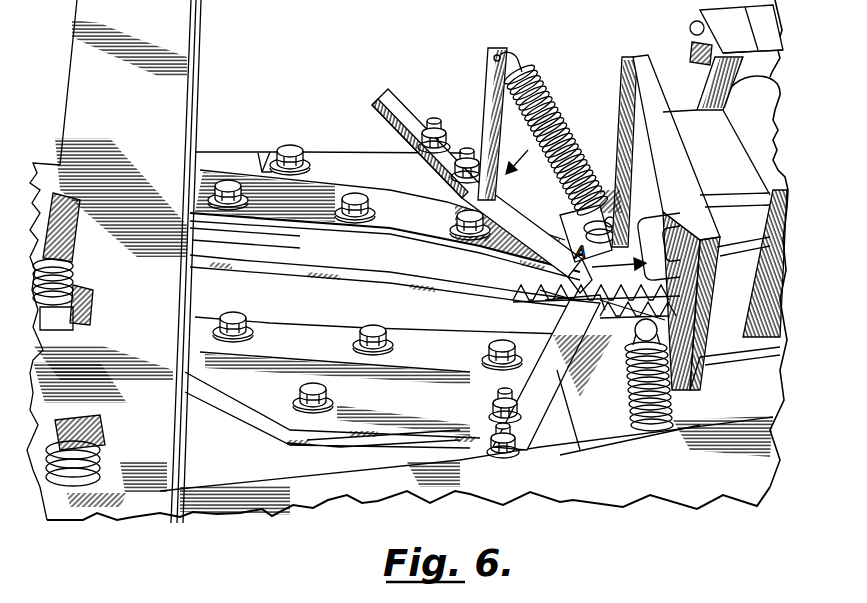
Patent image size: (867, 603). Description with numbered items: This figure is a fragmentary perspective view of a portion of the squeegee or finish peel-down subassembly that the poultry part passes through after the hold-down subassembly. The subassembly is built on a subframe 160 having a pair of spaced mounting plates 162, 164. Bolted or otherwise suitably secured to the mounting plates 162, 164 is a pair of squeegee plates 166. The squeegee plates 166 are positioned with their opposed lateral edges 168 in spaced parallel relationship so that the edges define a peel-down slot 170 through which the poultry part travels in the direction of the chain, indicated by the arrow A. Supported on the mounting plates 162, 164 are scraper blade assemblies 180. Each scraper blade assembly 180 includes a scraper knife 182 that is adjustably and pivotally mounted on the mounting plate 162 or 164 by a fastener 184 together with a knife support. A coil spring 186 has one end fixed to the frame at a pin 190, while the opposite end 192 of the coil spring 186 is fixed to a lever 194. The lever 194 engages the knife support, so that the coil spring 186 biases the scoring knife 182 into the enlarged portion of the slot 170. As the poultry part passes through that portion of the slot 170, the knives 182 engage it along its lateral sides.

The subframe 160 is at (205, 102).
The mounting plate 162 is at (303, 186).
The mounting plate 164 is at (273, 355).
The squeegee plate 166 is at (278, 295).
The lateral edge 168 is at (272, 280).
The peel-down slot 170 is at (330, 276).
The scraper blade assembly 180 is at (540, 110).
The scraper knife 182 is at (462, 208).
The fastener 184 is at (466, 150).
The coil spring 186 is at (552, 112).
The pin 190 is at (640, 197).
The end 192 is at (507, 62).
The lever 194 is at (487, 95).